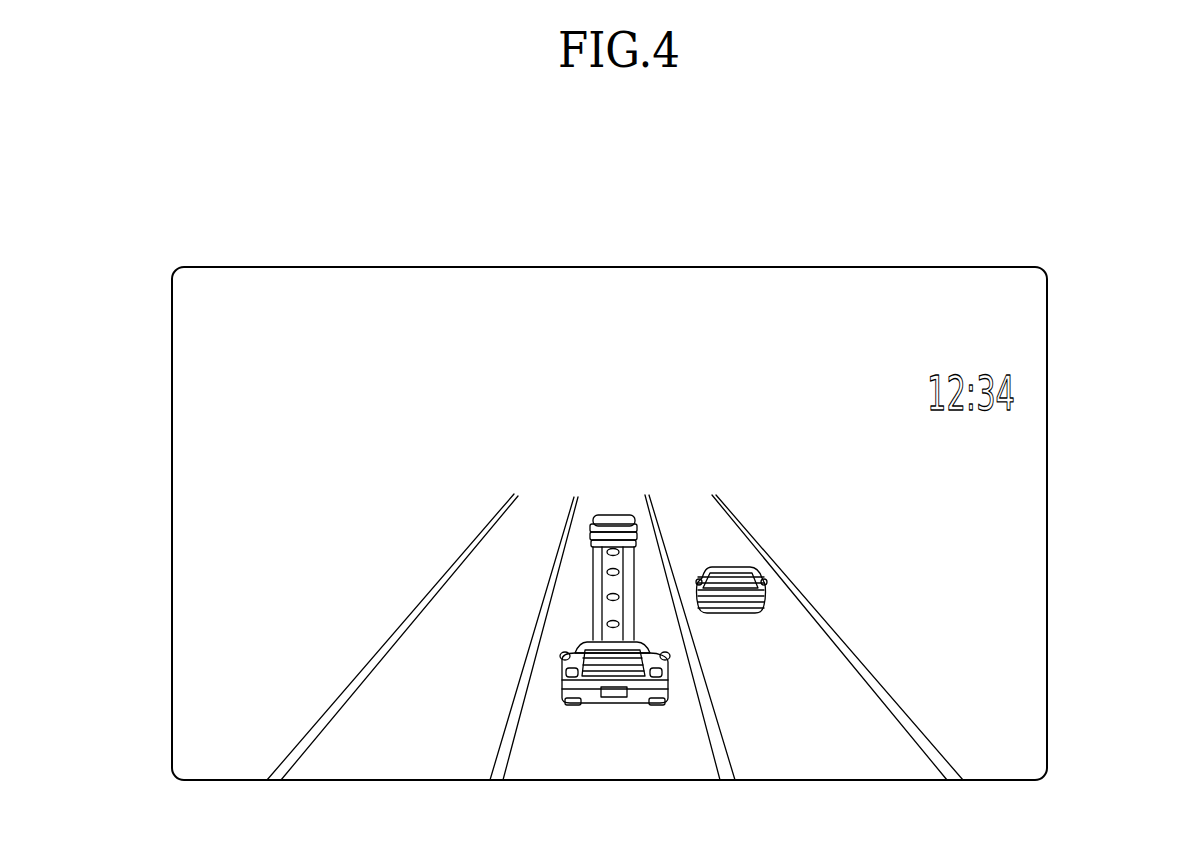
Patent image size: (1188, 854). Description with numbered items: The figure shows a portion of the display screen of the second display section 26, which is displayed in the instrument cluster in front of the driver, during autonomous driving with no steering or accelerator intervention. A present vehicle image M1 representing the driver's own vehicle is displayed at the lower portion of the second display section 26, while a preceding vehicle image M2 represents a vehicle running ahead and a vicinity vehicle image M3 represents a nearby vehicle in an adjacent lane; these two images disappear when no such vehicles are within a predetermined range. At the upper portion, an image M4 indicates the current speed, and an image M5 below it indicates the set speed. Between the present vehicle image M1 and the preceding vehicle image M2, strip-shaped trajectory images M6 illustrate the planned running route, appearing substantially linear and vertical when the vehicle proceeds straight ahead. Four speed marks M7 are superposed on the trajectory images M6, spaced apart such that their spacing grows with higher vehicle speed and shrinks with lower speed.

The second display section 26 is at (1047, 657).
The present vehicle image M1 is at (622, 704).
The preceding vehicle image M2 is at (618, 513).
The vicinity vehicle image M3 is at (740, 567).
The image indicating current speed M4 is at (580, 287).
The image indicating set speed M5 is at (490, 405).
The trajectory images M6 is at (580, 603).
The speed marks M7 is at (580, 570).